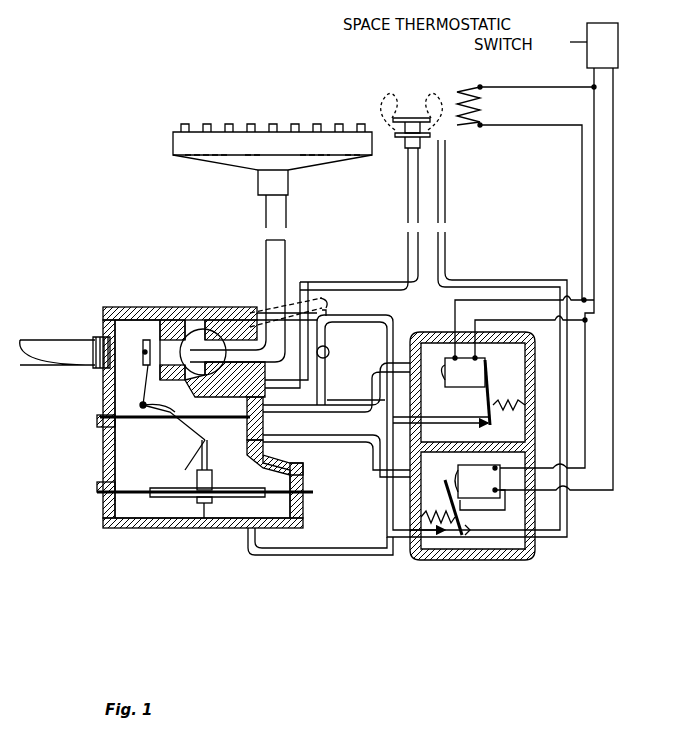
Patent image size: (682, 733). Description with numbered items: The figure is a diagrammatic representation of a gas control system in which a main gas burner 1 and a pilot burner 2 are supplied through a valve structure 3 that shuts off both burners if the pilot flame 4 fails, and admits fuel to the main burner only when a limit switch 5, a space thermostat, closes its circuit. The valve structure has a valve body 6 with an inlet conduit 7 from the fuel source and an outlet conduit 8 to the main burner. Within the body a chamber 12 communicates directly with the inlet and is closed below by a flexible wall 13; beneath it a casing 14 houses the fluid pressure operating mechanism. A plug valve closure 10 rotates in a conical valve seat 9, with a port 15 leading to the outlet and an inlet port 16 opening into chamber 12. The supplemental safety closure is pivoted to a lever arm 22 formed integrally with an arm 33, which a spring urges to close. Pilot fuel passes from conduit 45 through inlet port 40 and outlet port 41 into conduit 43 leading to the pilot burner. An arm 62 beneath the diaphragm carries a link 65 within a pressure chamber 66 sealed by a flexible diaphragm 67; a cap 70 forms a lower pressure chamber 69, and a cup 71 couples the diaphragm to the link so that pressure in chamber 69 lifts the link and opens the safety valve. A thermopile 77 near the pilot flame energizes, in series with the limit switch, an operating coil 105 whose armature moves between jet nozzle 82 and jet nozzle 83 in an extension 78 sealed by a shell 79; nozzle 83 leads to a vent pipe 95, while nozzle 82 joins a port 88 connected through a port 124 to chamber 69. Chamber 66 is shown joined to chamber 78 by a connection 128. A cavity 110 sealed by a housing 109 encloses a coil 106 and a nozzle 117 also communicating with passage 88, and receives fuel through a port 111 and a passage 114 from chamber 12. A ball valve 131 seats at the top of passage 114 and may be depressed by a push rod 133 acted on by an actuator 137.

The main gas burner 1 is at (173, 140).
The pilot burner 2 is at (405, 150).
The valve structure 3 is at (168, 422).
The pilot flame 4 is at (388, 95).
The limit switch 5 is at (618, 42).
The valve body 6 is at (130, 307).
The inlet conduit 7 is at (52, 345).
The outlet conduit 8 is at (286, 262).
The conical valve seat 9 is at (185, 330).
The plug valve closure 10 is at (203, 328).
The chamber 12 is at (160, 418).
The flexible wall 13 is at (110, 432).
The casing 14 is at (102, 458).
The port 15 is at (262, 292).
The inlet port 16 is at (178, 318).
The lever arm 22 is at (108, 392).
The arm 33 is at (178, 415).
The inlet port 40 is at (230, 305).
The outlet port 41 is at (240, 372).
The conduit 43 is at (372, 283).
The conduit 45 is at (388, 345).
The arm 62 is at (190, 445).
The link 65 is at (208, 454).
The pressure chamber 66 is at (140, 452).
The flexible diaphragm 67 is at (120, 500).
The pressure chamber 69 is at (148, 509).
The cap 70 is at (225, 530).
The cup 71 is at (212, 478).
The thermopile 77 is at (468, 127).
The extension 78 is at (445, 495).
The shell 79 is at (525, 560).
The jet nozzle 82 is at (440, 548).
The jet nozzle 83 is at (478, 548).
The port 88 is at (398, 498).
The vent pipe 95 is at (568, 512).
The operating coil 105 is at (480, 487).
The coil 106 is at (518, 341).
The housing 109 is at (435, 330).
The cavity 110 is at (474, 354).
The port 111 is at (358, 405).
The passage 114 is at (308, 405).
The nozzle 117 is at (458, 420).
The port 124 is at (338, 555).
The connection 128 is at (350, 442).
The ball valve 131 is at (328, 355).
The push rod 133 is at (330, 312).
The actuator 137 is at (325, 298).